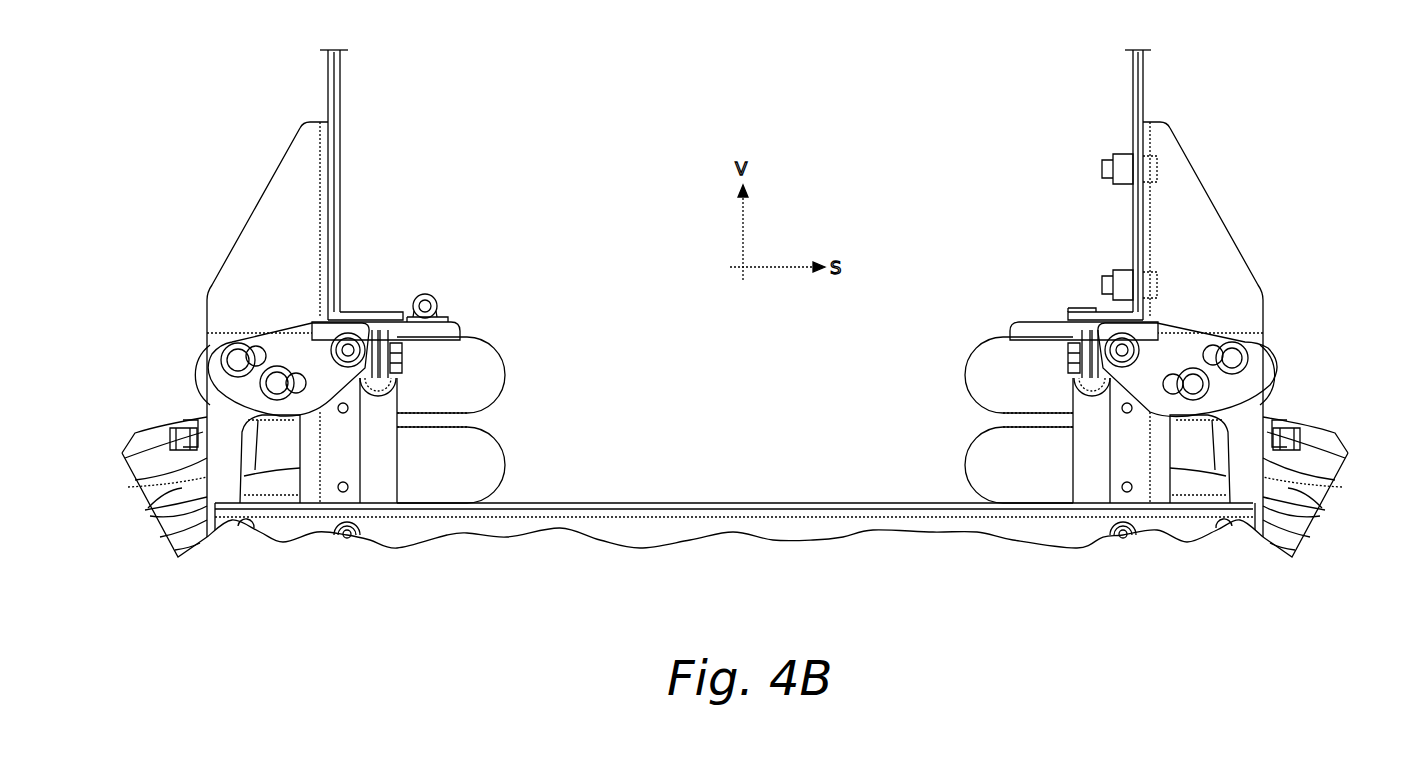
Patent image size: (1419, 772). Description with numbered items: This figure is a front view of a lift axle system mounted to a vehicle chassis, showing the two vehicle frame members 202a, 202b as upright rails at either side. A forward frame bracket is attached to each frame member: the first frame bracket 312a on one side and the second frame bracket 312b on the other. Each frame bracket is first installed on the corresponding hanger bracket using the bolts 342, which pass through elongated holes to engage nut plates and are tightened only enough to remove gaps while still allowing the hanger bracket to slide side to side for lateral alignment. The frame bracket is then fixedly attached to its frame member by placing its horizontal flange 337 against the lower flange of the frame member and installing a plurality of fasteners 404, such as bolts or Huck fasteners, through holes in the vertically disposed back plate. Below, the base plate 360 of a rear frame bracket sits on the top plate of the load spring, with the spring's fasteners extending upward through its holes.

The first frame member 202a is at (1143, 85).
The second frame member 202b is at (328, 75).
The first frame bracket 312a is at (1252, 270).
The second frame bracket 312b is at (249, 218).
The horizontal flange 337 is at (1093, 308).
The bolts 342 is at (1267, 400).
The base plate 360 is at (1040, 322).
The fasteners 404 is at (1160, 283).